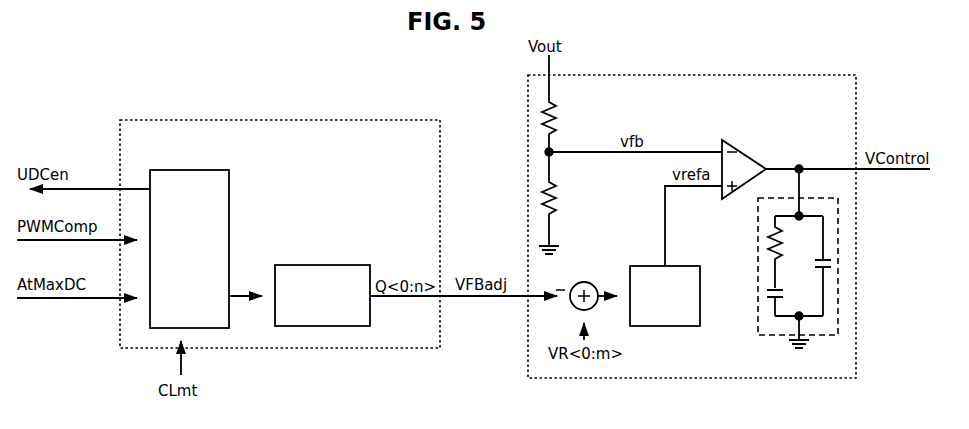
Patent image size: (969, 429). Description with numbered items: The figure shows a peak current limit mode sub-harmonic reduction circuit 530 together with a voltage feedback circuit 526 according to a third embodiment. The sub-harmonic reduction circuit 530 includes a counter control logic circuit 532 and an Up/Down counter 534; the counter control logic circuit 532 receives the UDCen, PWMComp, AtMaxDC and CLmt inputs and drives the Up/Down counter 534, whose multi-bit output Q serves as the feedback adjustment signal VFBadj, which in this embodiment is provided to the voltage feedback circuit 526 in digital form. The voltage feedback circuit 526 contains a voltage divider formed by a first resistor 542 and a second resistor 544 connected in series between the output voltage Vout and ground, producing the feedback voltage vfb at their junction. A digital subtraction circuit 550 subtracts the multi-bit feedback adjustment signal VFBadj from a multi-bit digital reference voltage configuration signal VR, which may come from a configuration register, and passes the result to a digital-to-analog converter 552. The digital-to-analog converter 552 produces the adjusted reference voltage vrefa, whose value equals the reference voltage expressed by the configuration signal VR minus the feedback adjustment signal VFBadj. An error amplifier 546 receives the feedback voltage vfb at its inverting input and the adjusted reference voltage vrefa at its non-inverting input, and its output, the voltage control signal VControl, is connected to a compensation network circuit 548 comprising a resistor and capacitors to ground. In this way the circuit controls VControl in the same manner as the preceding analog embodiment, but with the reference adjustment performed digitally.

The voltage feedback circuit 526 is at (766, 74).
The sub-harmonic reduction circuit 530 is at (290, 119).
The counter control logic circuit 532 is at (183, 170).
The Up/Down counter 534 is at (291, 265).
The first resistor 542 is at (557, 108).
The second resistor 544 is at (557, 189).
The error amplifier 546 is at (748, 149).
The compensation network circuit 548 is at (758, 253).
The digital subtraction circuit 550 is at (586, 282).
The digital-to-analog converter (DAC) 552 is at (677, 327).